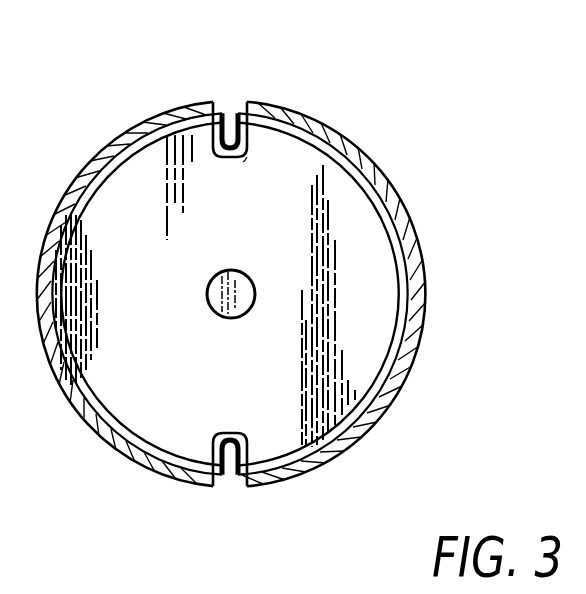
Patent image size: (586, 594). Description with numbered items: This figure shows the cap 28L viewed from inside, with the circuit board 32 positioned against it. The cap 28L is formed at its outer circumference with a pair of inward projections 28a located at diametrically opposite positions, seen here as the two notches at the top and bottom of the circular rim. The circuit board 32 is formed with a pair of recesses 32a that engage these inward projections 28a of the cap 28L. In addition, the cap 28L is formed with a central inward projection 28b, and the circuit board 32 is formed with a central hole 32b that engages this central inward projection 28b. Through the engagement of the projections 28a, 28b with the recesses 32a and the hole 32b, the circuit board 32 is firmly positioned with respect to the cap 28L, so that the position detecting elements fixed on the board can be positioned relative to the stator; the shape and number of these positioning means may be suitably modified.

The cap 28L is at (294, 292).
The inward projections 28a is at (232, 146).
The central inward projection 28b is at (257, 311).
The circuit board 32 is at (362, 190).
The recesses 32a is at (244, 160).
The central hole 32b is at (370, 285).